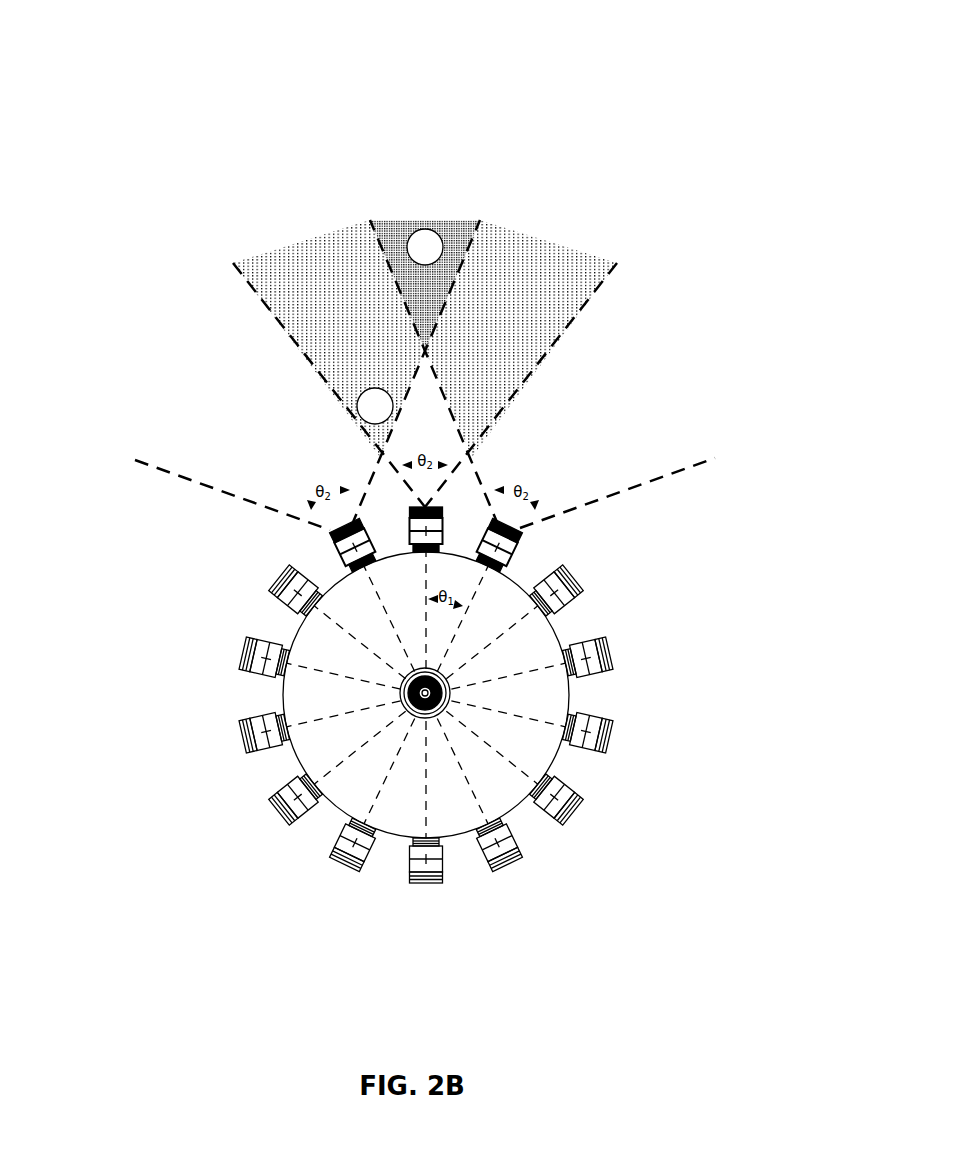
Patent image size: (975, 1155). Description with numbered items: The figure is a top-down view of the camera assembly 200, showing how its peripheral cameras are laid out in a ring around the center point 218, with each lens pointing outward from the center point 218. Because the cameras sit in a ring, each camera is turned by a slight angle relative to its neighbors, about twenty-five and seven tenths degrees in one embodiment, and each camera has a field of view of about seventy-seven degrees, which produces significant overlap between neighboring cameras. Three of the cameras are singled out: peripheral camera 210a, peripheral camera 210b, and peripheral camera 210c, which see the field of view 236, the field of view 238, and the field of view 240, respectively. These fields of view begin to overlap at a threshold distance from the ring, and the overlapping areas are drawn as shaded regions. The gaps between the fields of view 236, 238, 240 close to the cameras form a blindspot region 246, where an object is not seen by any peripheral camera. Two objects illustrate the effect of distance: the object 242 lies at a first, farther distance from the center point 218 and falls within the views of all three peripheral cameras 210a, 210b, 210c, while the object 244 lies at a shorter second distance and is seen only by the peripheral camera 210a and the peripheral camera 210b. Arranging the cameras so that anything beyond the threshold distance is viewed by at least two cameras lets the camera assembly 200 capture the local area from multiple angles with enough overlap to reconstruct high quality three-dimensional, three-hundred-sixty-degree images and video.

The camera assembly 200 is at (83, 24).
The peripheral camera 210a is at (330, 537).
The peripheral camera 210b is at (417, 558).
The peripheral camera 210c is at (513, 543).
The center point 218 is at (405, 693).
The field of view 236 is at (310, 480).
The field of view 238 is at (447, 453).
The field of view 240 is at (537, 483).
The object 242 is at (425, 229).
The object 244 is at (375, 388).
The blindspot region 246 is at (460, 508).